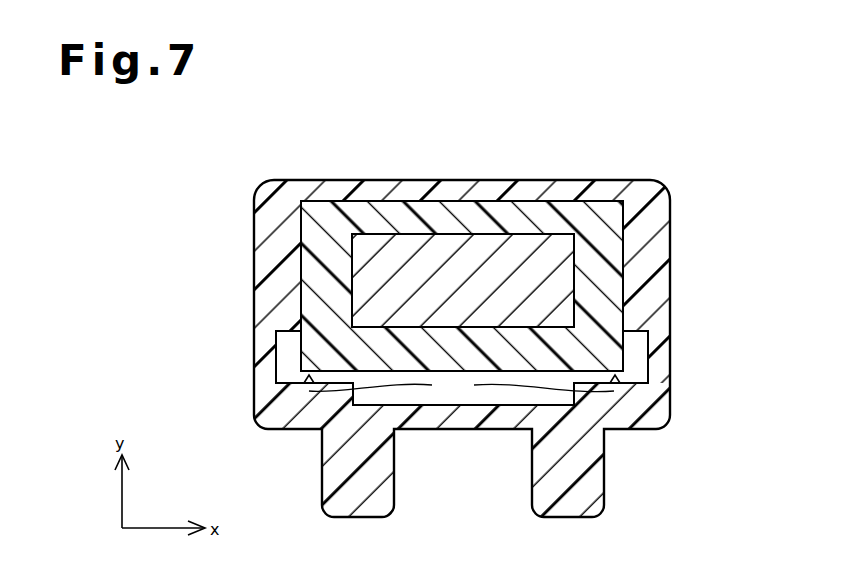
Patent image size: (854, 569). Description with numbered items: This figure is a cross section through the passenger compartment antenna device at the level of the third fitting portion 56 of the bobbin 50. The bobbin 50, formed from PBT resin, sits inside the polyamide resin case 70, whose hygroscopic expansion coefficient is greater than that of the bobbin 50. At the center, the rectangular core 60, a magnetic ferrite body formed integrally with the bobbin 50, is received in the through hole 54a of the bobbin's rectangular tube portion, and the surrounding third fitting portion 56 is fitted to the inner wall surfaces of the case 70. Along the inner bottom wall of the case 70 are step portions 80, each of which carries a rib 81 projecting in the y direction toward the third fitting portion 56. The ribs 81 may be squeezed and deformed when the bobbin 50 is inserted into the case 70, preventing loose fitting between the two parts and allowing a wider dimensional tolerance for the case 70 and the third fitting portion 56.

The bobbin 50 is at (462, 274).
The through hole 54a is at (529, 242).
The third fitting portion 56 is at (476, 212).
The core 60 is at (414, 243).
The case 70 is at (578, 179).
The step portions 80 is at (461, 388).
The rib 81 is at (303, 378).